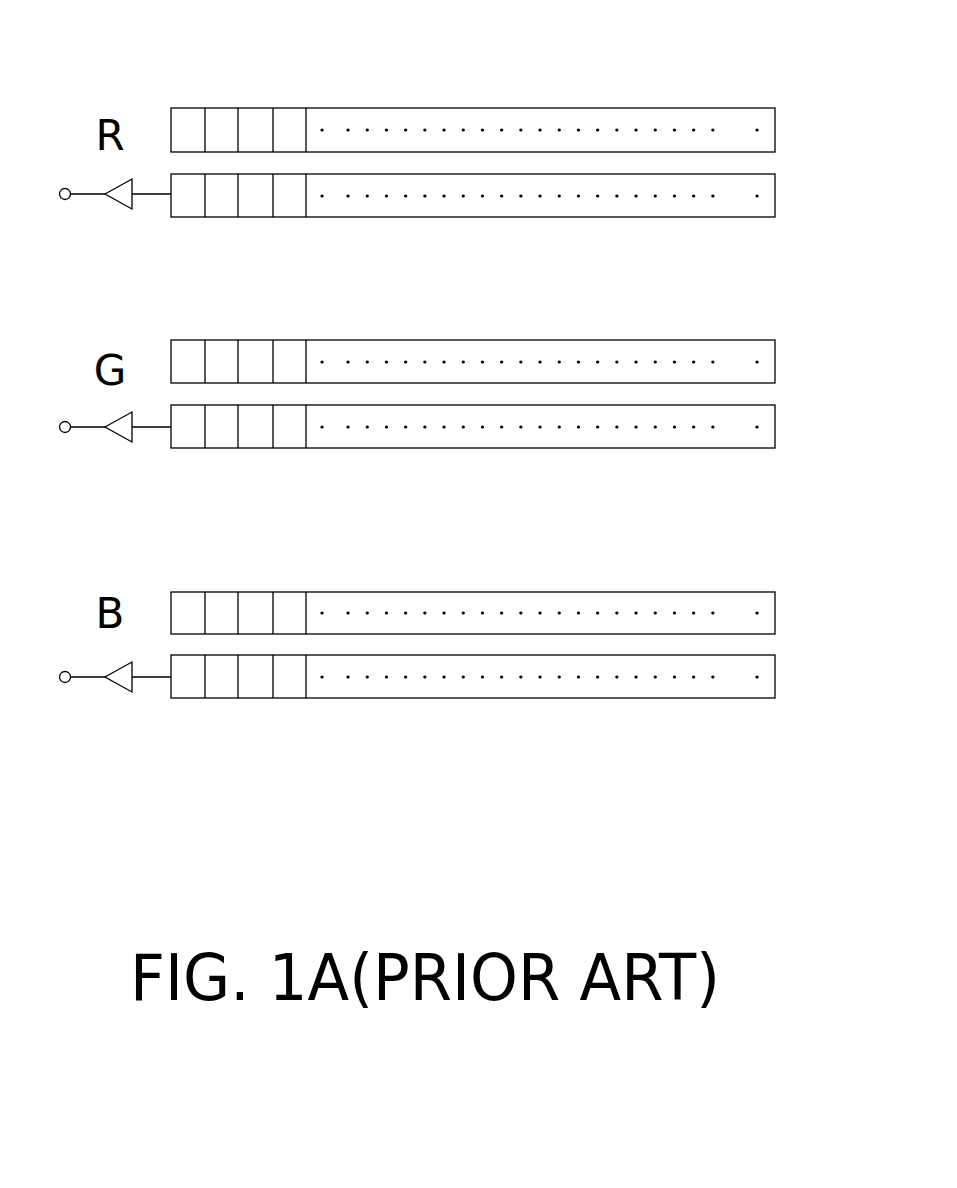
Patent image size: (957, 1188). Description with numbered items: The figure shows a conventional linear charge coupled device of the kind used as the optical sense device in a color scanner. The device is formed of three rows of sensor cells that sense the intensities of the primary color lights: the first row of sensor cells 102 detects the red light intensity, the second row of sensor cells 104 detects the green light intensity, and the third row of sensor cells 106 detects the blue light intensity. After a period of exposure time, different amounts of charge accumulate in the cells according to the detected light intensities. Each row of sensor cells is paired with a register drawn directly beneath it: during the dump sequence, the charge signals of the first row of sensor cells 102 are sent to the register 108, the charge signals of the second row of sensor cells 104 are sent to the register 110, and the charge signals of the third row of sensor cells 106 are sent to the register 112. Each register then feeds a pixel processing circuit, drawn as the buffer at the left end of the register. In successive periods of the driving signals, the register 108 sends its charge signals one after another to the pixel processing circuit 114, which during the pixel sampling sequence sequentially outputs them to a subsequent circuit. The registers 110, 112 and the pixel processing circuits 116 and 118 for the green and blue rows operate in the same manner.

The first row of sensor cells 102 is at (670, 108).
The second row of sensor cells 104 is at (670, 340).
The third row of sensor cells 106 is at (670, 592).
The register 108 is at (777, 192).
The register 110 is at (778, 423).
The register 112 is at (778, 675).
The pixel processing circuit 114 is at (120, 203).
The pixel processing circuit 116 is at (120, 436).
The pixel processing circuit 118 is at (120, 686).